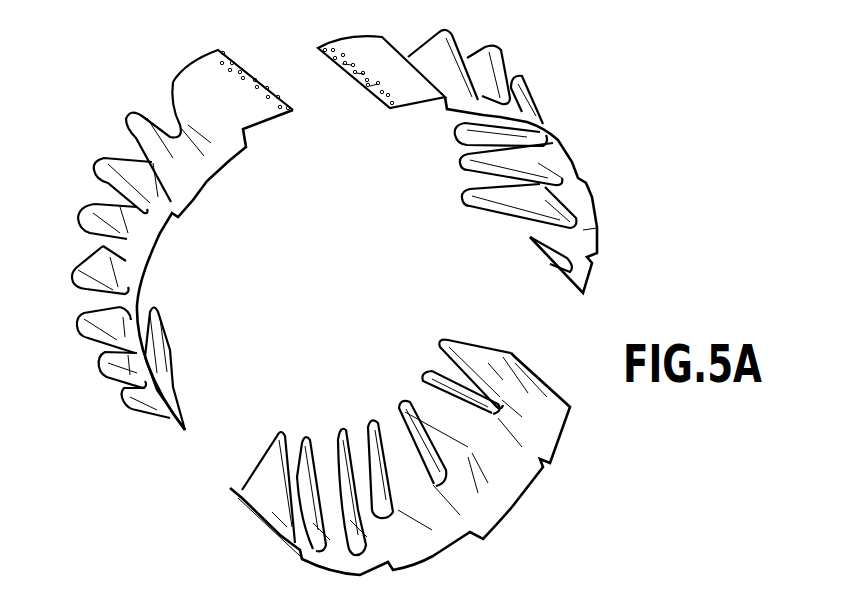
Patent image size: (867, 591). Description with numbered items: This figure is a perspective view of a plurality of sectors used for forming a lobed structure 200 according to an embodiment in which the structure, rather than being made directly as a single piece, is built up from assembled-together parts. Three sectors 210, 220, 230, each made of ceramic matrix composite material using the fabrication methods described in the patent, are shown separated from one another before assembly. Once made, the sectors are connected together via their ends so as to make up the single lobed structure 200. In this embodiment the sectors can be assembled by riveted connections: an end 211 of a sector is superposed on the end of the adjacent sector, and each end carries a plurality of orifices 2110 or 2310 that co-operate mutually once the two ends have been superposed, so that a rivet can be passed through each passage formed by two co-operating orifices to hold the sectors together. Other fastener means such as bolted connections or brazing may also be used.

The lobed structure 200 is at (612, 108).
The sector 210 is at (588, 229).
The sector 220 is at (510, 500).
The sector 230 is at (93, 204).
The end 211 is at (200, 68).
The orifices 2310 is at (252, 67).
The orifices 2110 is at (382, 85).